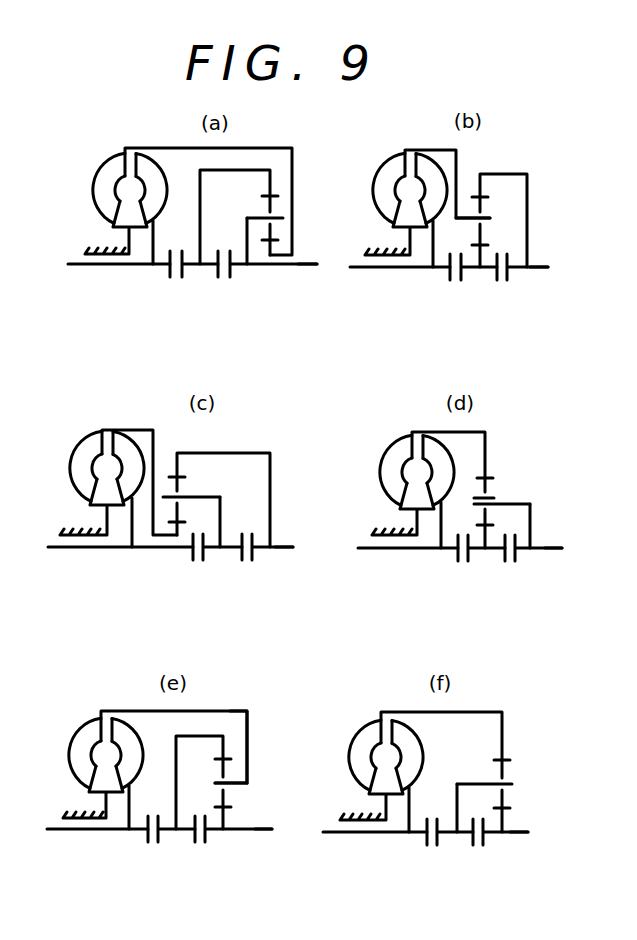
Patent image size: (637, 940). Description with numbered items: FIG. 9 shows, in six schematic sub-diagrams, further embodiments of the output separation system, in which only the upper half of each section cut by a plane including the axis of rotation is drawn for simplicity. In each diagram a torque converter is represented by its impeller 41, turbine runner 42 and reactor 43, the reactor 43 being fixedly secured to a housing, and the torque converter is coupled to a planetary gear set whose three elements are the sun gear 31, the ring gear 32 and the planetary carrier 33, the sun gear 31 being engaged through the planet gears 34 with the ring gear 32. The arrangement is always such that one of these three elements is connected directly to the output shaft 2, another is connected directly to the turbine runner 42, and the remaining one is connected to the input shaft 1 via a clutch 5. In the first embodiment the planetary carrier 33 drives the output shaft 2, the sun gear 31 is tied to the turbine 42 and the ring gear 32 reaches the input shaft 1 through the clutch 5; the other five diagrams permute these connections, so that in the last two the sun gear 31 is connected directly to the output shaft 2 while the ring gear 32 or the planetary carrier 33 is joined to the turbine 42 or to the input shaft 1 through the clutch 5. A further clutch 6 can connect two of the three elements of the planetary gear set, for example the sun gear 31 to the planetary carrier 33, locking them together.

The input shaft 1 is at (82, 264).
The output shaft 2 is at (297, 262).
The clutch 5 is at (169, 270).
The clutch 6 is at (217, 270).
The sun gear 31 is at (263, 250).
The ring gear 32 is at (265, 195).
The planetary carrier 33 is at (248, 266).
The planet gears 34 is at (276, 209).
The impeller 41 is at (157, 162).
The turbine runner 42 is at (108, 170).
The reactor 43 is at (113, 226).